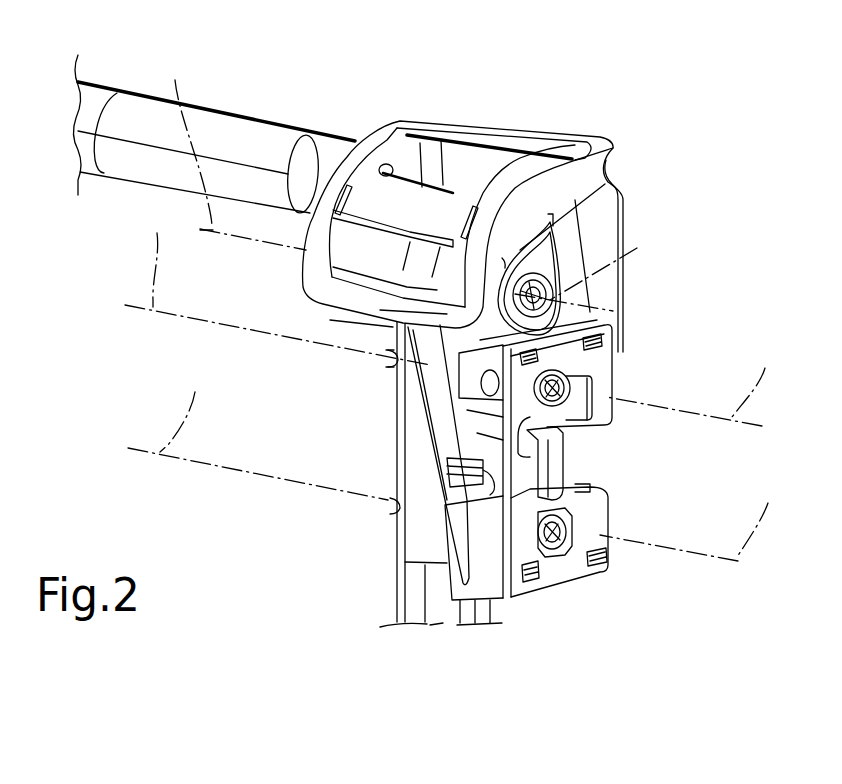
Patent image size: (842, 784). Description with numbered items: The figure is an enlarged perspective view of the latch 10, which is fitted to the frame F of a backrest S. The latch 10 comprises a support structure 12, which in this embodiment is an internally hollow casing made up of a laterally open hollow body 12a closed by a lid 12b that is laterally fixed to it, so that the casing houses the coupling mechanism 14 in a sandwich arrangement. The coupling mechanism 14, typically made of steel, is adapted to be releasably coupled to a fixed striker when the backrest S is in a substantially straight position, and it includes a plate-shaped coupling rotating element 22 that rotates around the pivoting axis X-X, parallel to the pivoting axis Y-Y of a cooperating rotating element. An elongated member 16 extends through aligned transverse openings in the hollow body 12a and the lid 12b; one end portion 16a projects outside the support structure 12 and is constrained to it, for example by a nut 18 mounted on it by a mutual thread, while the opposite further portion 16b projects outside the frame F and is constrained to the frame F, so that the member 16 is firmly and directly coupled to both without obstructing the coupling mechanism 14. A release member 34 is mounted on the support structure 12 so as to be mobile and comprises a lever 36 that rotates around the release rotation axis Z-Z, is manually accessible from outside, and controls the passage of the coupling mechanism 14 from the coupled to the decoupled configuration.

The latch 10 is at (597, 106).
The support structure 12 is at (592, 174).
The hollow body 12a is at (485, 580).
The lid 12b is at (594, 568).
The coupling mechanism 14 is at (606, 436).
The elongated member 16 is at (377, 367).
The portion of the elongated member 16a is at (511, 378).
The further portion of the elongated member 16b is at (387, 352).
The nut 18 is at (566, 385).
The coupling rotating element 22 is at (580, 490).
The release member 34 is at (490, 122).
The lever 36 is at (452, 162).
The frame F is at (283, 142).
The backrest S is at (229, 104).
The pivoting axis X- X is at (454, 462).
The pivoting axis Y- Y is at (446, 315).
The release rotation axis Z- Z is at (407, 181).